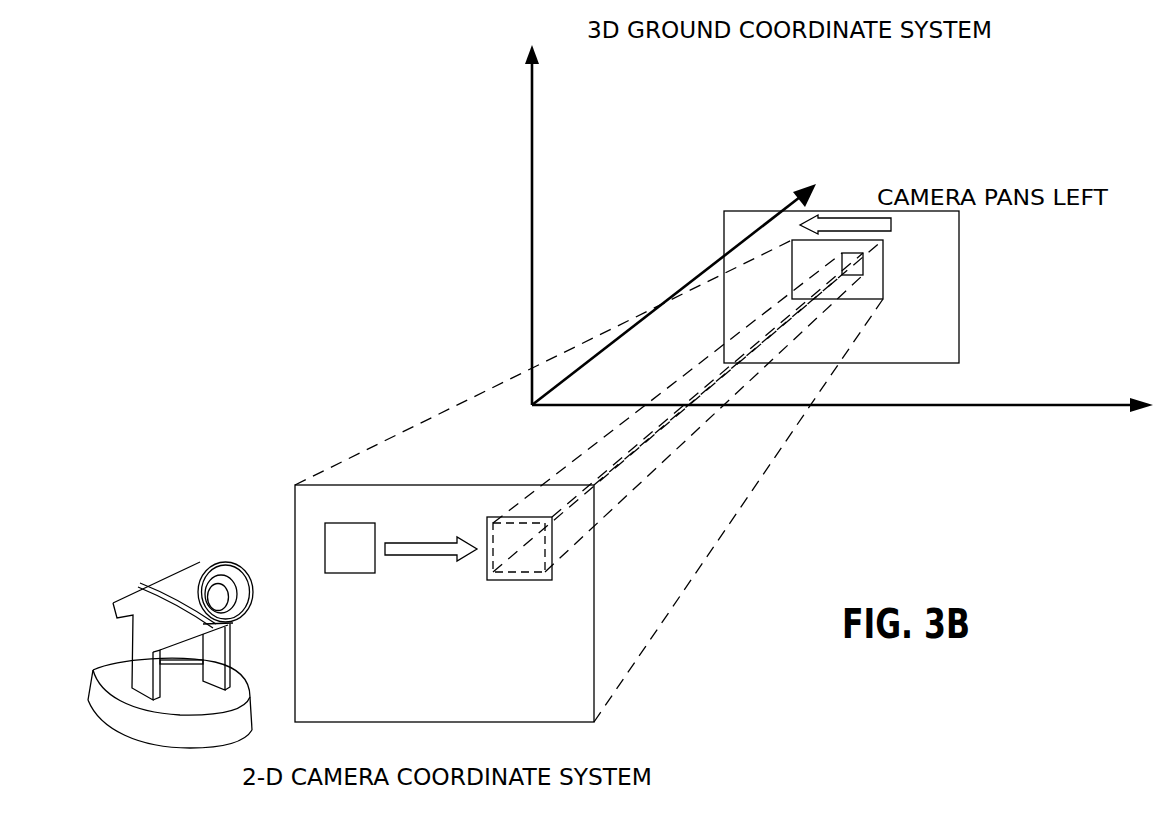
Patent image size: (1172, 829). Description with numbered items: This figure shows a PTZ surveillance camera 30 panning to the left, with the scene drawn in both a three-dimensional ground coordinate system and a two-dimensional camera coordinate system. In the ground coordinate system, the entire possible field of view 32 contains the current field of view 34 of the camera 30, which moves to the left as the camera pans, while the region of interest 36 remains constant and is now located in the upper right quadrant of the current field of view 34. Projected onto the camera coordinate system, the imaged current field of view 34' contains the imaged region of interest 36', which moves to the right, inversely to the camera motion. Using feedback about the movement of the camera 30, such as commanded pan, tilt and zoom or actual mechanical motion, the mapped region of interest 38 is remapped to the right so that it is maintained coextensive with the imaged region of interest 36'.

The PTZ surveillance camera 30 is at (209, 561).
The entire possible field of view 32 is at (860, 211).
The current field of view 34 is at (866, 269).
The region of interest 36 is at (884, 278).
The imaged current field of view 34' is at (479, 603).
The imaged region of interest 36' is at (574, 547).
The mapped region of interest 38 is at (530, 582).